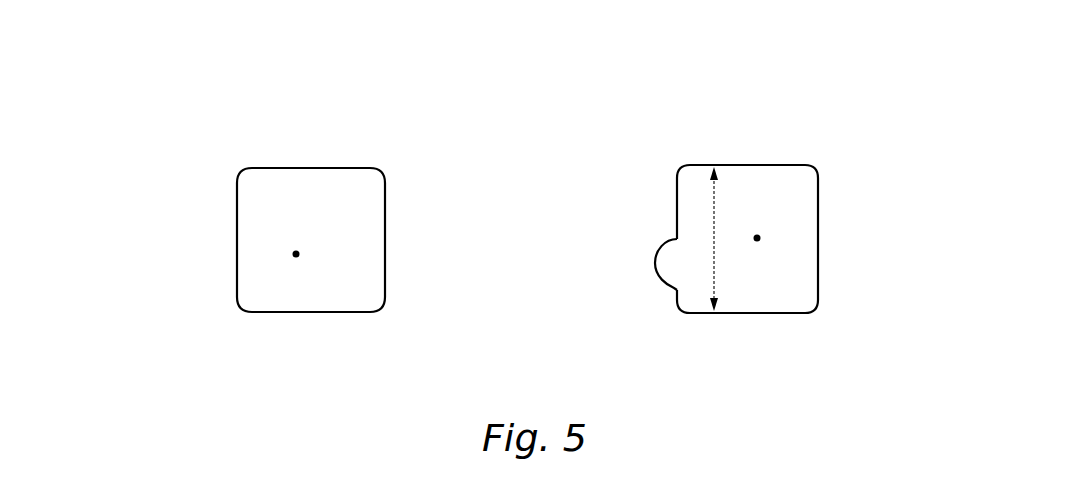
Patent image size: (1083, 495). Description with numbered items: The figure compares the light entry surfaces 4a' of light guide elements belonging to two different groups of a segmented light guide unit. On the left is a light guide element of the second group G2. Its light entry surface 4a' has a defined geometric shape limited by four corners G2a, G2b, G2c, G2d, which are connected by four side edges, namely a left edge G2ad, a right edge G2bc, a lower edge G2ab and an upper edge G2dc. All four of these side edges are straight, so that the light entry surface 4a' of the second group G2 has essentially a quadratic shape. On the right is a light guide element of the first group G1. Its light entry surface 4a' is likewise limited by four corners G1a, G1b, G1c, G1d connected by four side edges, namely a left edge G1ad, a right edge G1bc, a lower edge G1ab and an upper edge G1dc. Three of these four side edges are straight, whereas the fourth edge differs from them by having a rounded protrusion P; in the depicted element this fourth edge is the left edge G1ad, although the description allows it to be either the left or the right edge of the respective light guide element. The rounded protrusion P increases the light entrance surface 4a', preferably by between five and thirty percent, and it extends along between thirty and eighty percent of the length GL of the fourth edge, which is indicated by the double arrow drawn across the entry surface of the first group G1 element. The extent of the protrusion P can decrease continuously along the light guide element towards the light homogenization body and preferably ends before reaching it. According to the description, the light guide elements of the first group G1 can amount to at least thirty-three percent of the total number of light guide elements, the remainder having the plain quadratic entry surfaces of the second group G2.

The light entry surface 4a' is at (506, 236).
The second group of light guide elements G2 is at (293, 255).
The corner of second-group light entry surface G2a is at (247, 310).
The corner of second-group light entry surface G2b is at (380, 308).
The corner of second-group light entry surface G2c is at (380, 172).
The corner of second-group light entry surface G2d is at (242, 172).
The lower edge G2ab is at (327, 313).
The right edge G2bc is at (385, 232).
The upper edge G2dc is at (315, 167).
The left edge G2ad is at (233, 200).
The first group of light guide elements G1 is at (755, 235).
The corner of first-group light entry surface G1a is at (680, 312).
The corner of first-group light entry surface G1b is at (813, 310).
The corner of first-group light entry surface G1c is at (812, 167).
The corner of first-group light entry surface G1d is at (680, 173).
The lower edge G1ab is at (747, 318).
The right edge G1bc is at (819, 230).
The upper edge G1dc is at (750, 163).
The left edge G1ad is at (675, 195).
The rounded protrusion P is at (662, 290).
The length of the fourth edge GL is at (707, 239).